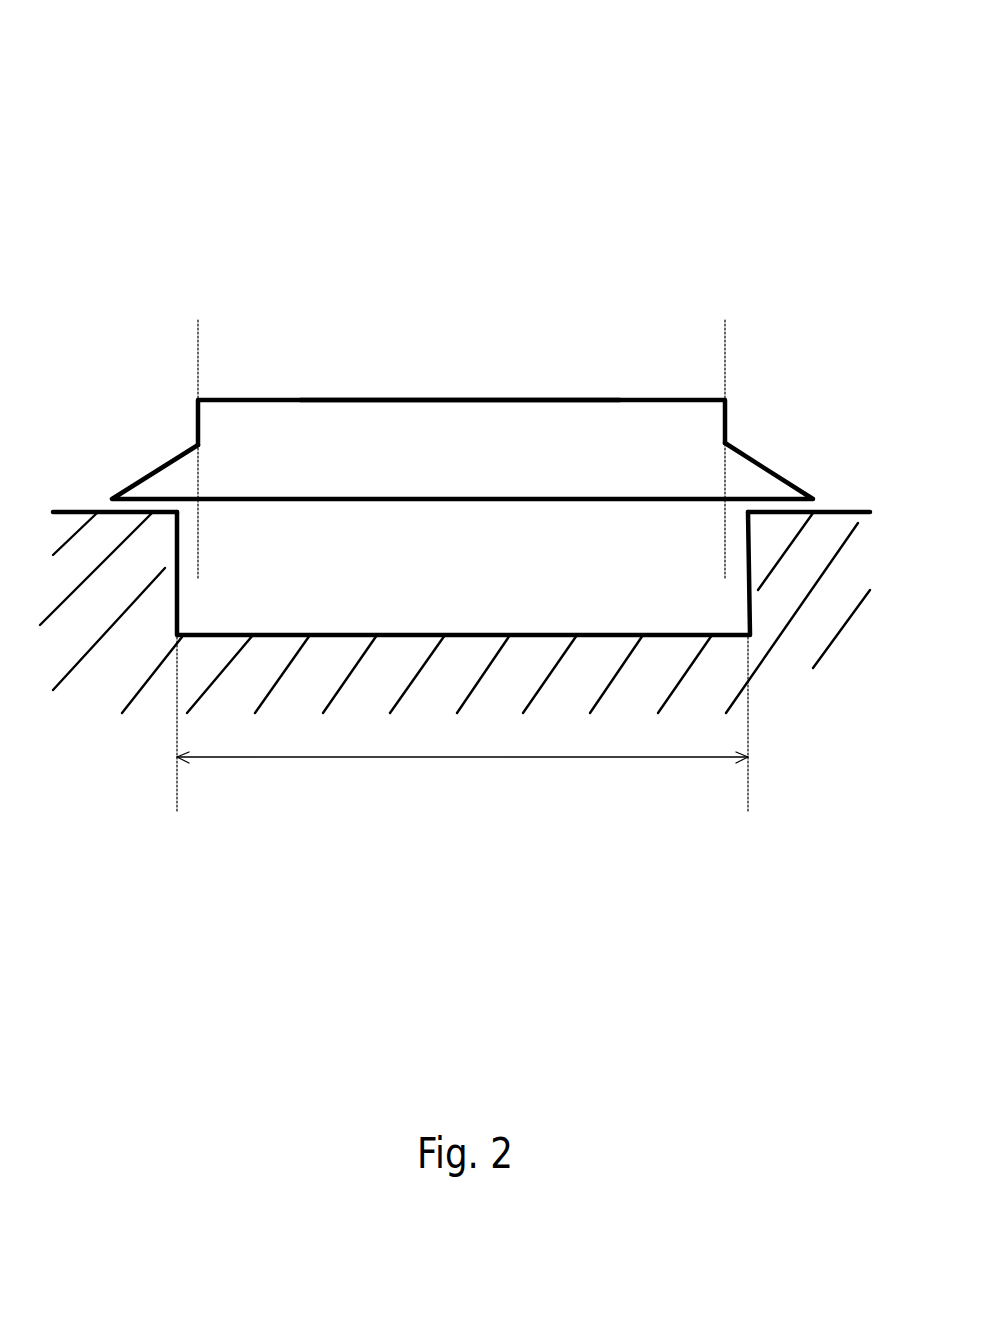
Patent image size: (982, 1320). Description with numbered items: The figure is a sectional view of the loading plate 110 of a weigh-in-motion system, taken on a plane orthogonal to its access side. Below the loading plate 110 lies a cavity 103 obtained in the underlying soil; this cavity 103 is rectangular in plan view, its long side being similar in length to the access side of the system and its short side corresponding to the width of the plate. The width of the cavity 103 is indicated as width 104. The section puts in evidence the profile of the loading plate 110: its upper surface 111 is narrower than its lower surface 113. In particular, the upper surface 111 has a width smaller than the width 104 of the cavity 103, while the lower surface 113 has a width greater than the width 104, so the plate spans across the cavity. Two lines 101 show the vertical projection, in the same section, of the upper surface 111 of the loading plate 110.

The lines of the vertical projection of the upper surface 101 is at (198, 360).
The cavity 103 is at (420, 585).
The width of the cavity 104 is at (375, 757).
The loading plate 110 is at (272, 445).
The upper surface 111 is at (360, 400).
The lower surface 113 is at (557, 498).